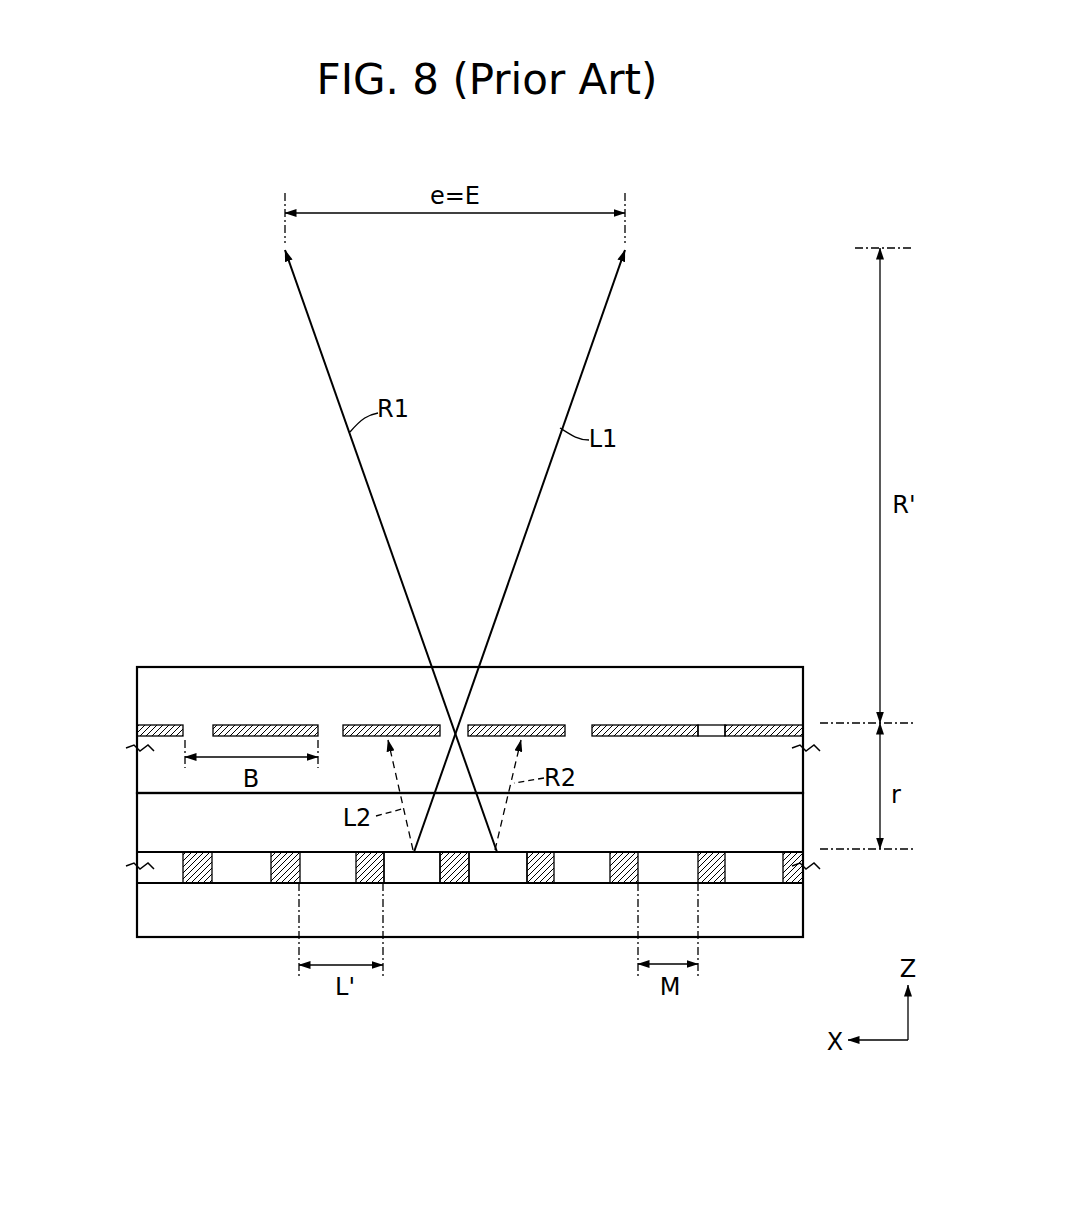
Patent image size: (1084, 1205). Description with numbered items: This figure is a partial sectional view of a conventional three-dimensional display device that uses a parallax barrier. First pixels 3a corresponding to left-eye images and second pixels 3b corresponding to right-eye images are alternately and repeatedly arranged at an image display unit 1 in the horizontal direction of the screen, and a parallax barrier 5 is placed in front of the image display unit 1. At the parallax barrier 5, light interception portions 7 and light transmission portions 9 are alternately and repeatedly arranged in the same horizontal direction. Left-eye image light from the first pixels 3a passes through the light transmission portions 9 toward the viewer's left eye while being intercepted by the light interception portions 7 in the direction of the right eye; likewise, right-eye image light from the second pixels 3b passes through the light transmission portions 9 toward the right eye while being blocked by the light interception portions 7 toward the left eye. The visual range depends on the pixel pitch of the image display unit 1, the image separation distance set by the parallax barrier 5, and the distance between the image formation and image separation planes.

The image display unit 1 is at (132, 919).
The first pixels 3a is at (432, 884).
The second pixels 3b is at (513, 884).
The parallax barrier 5 is at (130, 707).
The light interception portions 7 is at (630, 725).
The light transmission portions 9 is at (713, 725).